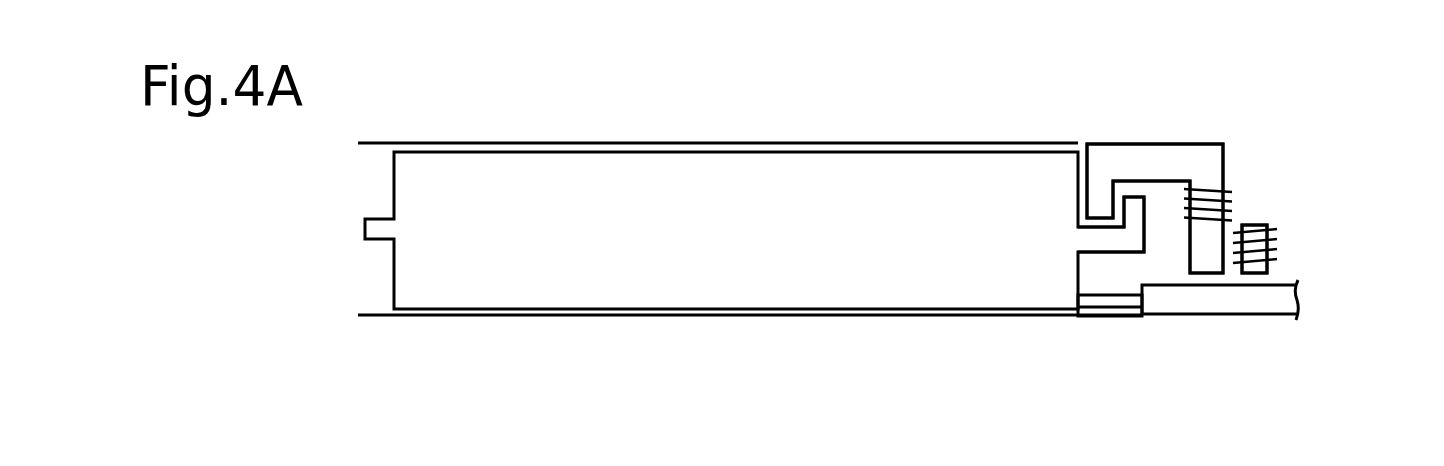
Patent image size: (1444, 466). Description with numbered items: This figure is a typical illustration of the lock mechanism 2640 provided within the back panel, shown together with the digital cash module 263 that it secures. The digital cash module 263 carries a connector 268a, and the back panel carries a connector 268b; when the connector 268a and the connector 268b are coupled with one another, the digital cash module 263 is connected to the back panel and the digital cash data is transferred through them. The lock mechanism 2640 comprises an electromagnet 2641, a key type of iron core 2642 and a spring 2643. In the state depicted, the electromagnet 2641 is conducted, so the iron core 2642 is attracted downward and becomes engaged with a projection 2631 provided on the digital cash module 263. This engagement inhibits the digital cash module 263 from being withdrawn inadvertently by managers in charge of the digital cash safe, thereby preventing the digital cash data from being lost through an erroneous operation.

The digital cash module 263 is at (625, 172).
The projection 2631 is at (1115, 242).
The lock mechanism 2640 is at (1395, 102).
The iron core 2642 is at (1215, 155).
The spring 2643 is at (1243, 205).
The electromagnet 2641 is at (1292, 247).
The connector 268a is at (1107, 300).
The connector 268b is at (1257, 308).